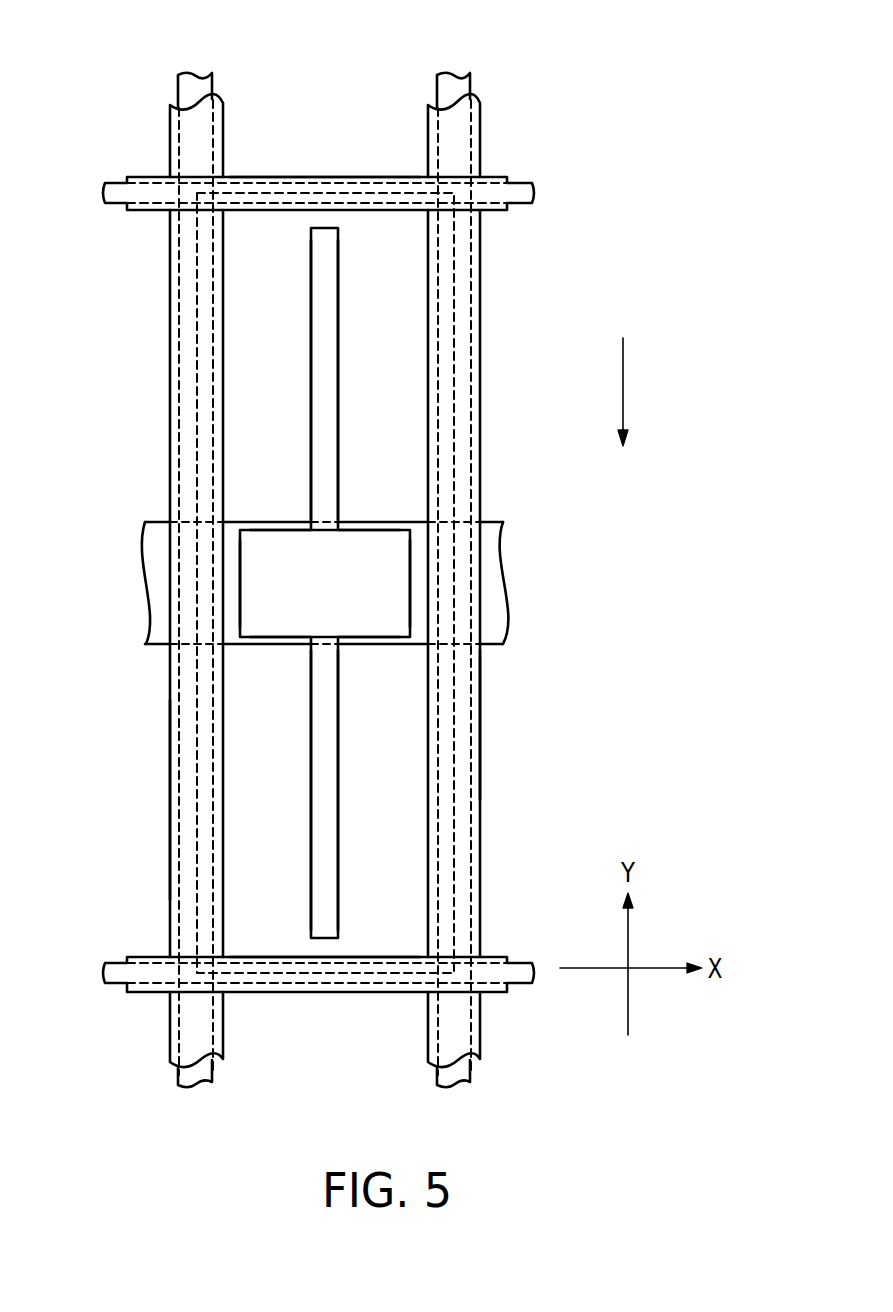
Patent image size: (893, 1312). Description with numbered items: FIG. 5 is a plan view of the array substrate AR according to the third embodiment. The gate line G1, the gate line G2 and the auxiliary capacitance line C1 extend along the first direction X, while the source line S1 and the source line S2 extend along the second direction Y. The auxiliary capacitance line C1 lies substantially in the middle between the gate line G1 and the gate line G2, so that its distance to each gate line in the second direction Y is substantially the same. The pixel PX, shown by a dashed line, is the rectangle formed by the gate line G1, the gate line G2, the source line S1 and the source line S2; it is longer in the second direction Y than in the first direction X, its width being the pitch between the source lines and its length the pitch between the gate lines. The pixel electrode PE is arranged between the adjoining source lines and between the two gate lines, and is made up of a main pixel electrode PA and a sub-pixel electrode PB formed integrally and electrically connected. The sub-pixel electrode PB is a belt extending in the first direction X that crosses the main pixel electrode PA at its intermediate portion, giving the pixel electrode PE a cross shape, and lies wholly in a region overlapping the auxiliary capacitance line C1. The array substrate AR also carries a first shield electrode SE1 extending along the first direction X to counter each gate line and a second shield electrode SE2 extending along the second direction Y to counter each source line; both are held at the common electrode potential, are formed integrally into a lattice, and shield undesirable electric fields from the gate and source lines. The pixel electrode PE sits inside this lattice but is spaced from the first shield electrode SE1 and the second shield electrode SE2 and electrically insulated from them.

The source line S1 is at (191, 80).
The source line S2 is at (455, 80).
The gate line G1 is at (105, 195).
The gate line G2 is at (105, 973).
The first shield electrode SE1 is at (340, 177).
The second shield electrode SE2 is at (482, 713).
The pixel PX is at (464, 184).
The pixel electrode PE is at (348, 270).
The main pixel electrode PA is at (328, 398).
The sub-pixel electrode PB is at (274, 622).
The auxiliary capacitance line C1 is at (146, 596).
The array substrate AR is at (574, 108).